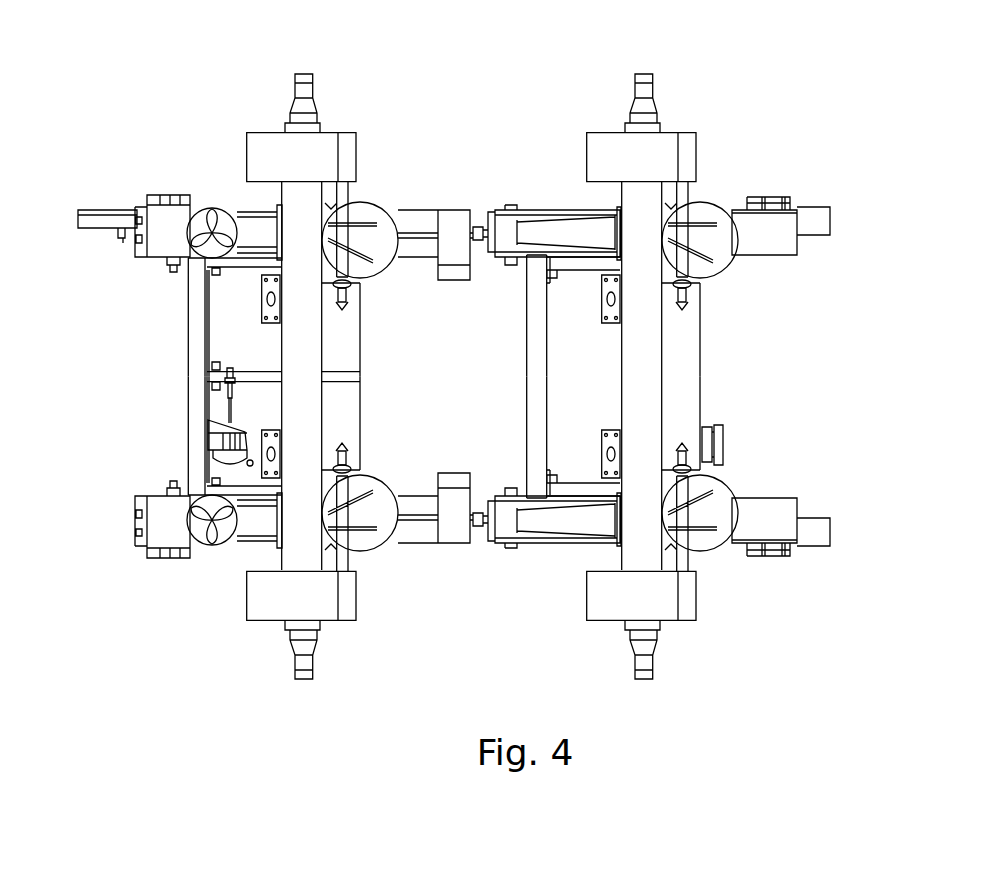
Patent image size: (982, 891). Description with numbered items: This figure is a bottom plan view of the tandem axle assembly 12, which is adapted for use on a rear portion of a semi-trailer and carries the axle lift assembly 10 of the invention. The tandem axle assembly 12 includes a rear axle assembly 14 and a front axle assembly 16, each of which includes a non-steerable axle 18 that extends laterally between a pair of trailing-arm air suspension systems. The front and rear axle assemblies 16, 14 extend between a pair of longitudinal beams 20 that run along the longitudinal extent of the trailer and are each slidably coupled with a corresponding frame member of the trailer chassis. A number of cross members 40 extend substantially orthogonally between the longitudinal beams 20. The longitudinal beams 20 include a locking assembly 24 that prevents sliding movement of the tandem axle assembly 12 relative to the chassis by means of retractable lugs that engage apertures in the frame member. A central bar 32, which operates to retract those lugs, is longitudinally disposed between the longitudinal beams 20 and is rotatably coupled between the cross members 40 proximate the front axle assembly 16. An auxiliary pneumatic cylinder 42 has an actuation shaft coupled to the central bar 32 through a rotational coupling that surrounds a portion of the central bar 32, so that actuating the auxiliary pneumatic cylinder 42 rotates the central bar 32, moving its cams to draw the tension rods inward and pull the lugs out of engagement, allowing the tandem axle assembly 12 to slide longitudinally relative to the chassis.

The axle lift assembly 10 is at (182, 178).
The tandem axle assembly 12 is at (690, 108).
The rear axle assembly 14 is at (685, 645).
The front axle assembly 16 is at (345, 645).
The non-steerable axle 18 is at (310, 415).
The longitudinal beam 20 is at (423, 223).
The locking assembly 24 is at (180, 385).
The central bar 32 is at (252, 375).
The cross member 40 is at (535, 378).
The auxiliary pneumatic cylinder 42 is at (223, 449).